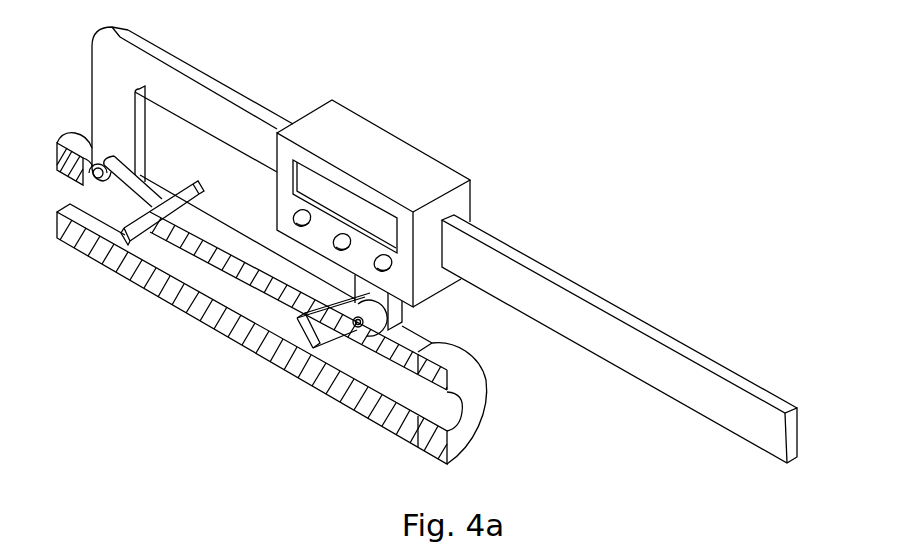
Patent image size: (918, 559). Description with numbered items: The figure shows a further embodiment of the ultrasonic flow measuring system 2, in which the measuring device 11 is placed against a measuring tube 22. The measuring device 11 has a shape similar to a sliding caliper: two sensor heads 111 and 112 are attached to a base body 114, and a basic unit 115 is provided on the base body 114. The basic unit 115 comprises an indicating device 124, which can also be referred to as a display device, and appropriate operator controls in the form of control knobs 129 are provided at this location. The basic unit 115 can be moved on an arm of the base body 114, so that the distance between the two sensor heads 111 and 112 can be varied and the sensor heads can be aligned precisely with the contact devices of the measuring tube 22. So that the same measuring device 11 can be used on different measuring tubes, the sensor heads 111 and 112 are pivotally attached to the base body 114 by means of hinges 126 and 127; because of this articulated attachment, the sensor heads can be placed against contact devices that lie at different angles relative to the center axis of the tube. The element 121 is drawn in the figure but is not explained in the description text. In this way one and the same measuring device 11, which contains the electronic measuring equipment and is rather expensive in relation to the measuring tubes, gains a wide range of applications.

The ultrasonic flow measuring system 2 is at (546, 91).
The measuring device 11 is at (218, 113).
The measuring tube 22 is at (237, 325).
The sensor head 111 is at (96, 196).
The sensor head 112 is at (300, 333).
The base body 114 is at (340, 137).
The basic unit 115 is at (447, 172).
The clamping jaw 121 is at (157, 233).
The indicating device 124 is at (307, 177).
The hinge 126 is at (358, 324).
The hinge 127 is at (98, 162).
The control knobs 129 is at (345, 240).